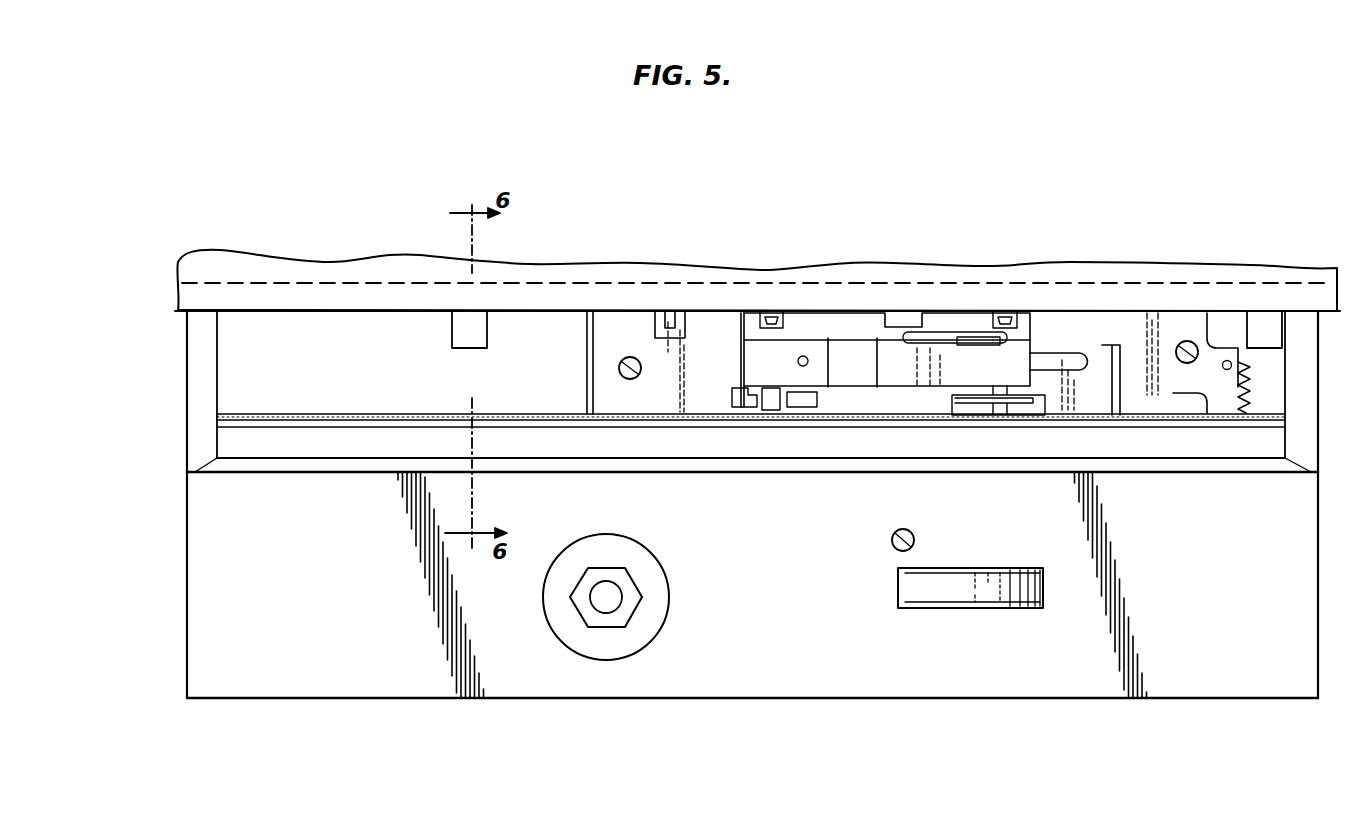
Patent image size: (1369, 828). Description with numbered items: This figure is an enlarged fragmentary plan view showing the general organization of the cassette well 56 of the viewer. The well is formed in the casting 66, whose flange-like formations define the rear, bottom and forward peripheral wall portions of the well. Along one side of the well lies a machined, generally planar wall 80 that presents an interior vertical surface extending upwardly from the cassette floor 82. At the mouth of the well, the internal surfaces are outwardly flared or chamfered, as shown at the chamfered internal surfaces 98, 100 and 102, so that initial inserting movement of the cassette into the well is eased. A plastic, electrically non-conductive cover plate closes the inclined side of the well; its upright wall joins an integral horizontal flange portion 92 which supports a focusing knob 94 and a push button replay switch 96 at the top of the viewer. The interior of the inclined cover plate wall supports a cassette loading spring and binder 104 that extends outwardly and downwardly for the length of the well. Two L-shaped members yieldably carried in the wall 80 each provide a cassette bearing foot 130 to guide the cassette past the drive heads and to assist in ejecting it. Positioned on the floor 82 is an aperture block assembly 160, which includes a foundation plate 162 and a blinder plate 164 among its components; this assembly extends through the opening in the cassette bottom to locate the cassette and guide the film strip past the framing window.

The cassette well 56 is at (380, 328).
The casting 66 is at (1223, 273).
The machined planar wall 80 is at (536, 285).
The cassette floor 82 is at (568, 393).
The horizontal flange portion 92 is at (780, 634).
The focusing knob 94 is at (980, 578).
The push button replay switch 96 is at (606, 597).
The chamfered internal surface 98 is at (201, 364).
The chamfered internal surface 100 is at (1302, 397).
The chamfered internal surface 102 is at (1172, 462).
The cassette loading spring and binder 104 is at (432, 435).
The cassette bearing foot 130 is at (472, 332).
The aperture block assembly 160 is at (873, 324).
The foundation plate 162 is at (1209, 363).
The blinder plate 164 is at (1096, 360).